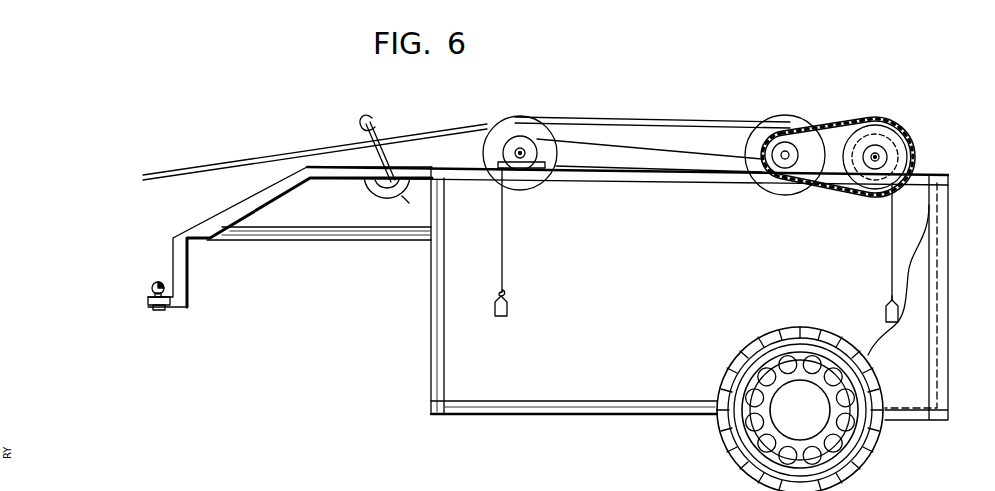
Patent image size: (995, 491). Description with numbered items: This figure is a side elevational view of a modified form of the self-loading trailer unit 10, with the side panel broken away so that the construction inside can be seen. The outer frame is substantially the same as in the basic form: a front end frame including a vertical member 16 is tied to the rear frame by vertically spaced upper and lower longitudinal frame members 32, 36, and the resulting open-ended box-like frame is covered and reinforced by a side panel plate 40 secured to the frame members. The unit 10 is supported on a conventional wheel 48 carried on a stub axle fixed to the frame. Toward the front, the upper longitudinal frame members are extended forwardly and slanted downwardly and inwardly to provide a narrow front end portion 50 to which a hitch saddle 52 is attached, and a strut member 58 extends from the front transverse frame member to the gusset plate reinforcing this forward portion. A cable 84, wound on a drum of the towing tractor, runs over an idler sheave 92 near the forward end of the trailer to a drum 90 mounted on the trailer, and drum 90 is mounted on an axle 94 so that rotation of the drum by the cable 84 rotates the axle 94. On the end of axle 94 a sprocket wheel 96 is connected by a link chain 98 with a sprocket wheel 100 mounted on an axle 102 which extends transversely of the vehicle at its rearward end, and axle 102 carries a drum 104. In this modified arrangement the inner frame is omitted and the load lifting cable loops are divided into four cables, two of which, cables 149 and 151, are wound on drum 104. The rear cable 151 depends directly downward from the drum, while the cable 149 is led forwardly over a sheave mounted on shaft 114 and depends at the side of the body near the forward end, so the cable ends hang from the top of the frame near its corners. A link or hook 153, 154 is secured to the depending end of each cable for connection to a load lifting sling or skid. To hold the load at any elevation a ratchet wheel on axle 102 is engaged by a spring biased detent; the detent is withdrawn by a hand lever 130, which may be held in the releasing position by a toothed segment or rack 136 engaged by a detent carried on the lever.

The self-loading trailer unit 10 is at (428, 367).
The vertical member 16 is at (435, 280).
The upper longitudinal frame member 32 is at (660, 178).
The lower longitudinal frame member 36 is at (623, 404).
The panel plate 40 is at (883, 338).
The wheel 48 is at (727, 447).
The narrow front end portion 50 is at (188, 293).
The hitch saddle 52 is at (155, 284).
The strut member 58 is at (352, 238).
The cable 84 is at (642, 119).
The drum 90 is at (782, 118).
The idler sheave 92 is at (547, 121).
The axle 94 is at (756, 152).
The sprocket wheel 96 is at (798, 142).
The link chain 98 is at (840, 126).
The sprocket wheel 100 is at (877, 134).
The axle 102 is at (880, 158).
The drum 104 is at (897, 147).
The shaft 114 is at (515, 153).
The hand lever 130 is at (375, 124).
The toothed segment or rack 136 is at (381, 190).
The load lifting cable 149 is at (505, 238).
The load lifting cable 151 is at (890, 244).
The link or hook 153 is at (508, 304).
The link or hook 154 is at (884, 304).